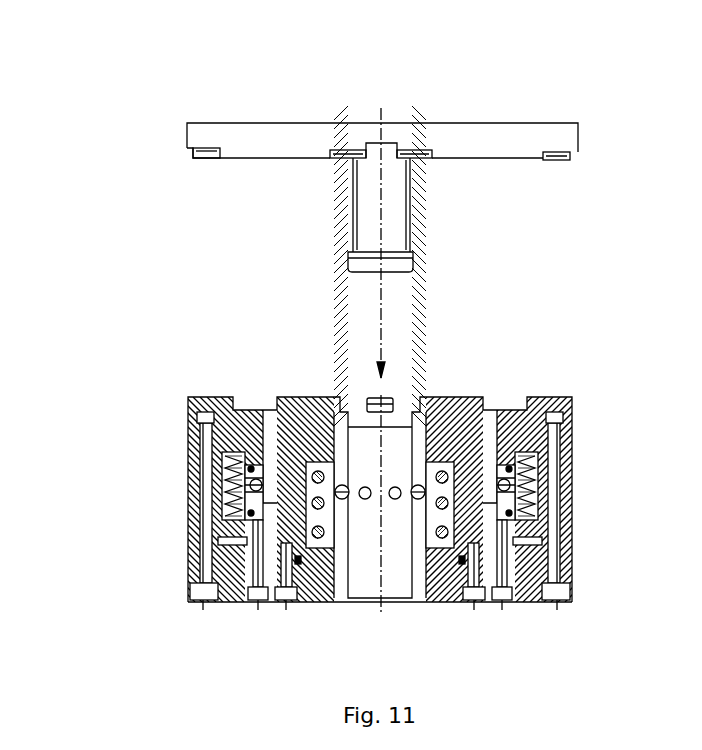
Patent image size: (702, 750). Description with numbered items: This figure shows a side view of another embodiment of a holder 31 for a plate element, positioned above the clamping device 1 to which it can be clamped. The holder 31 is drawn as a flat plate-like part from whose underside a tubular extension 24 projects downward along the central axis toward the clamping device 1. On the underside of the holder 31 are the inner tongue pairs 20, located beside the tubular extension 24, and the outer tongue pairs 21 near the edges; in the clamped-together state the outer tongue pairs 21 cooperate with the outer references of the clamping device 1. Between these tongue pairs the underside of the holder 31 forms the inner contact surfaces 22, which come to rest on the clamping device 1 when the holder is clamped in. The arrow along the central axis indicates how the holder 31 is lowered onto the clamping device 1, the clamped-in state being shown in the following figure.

The clamping device 1 is at (163, 462).
The inner tongue pairs 20 is at (353, 147).
The outer tongue pairs 21 is at (210, 150).
The inner contact surfaces 22 is at (255, 157).
The tubular extension 24 is at (367, 207).
The holder 31 is at (456, 137).